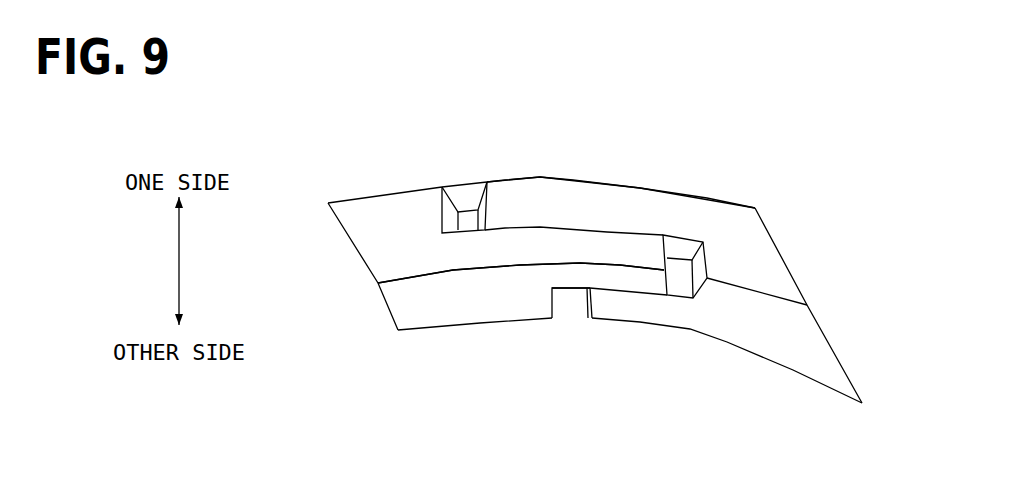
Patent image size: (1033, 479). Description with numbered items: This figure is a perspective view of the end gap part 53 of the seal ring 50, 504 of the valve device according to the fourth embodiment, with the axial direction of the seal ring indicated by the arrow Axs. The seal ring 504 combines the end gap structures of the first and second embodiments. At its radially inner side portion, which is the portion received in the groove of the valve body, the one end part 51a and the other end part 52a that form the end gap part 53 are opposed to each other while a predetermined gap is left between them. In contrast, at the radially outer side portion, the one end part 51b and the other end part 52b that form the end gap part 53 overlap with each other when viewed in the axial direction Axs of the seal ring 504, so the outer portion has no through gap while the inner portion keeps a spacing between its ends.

The seal ring 50 is at (572, 235).
The seal ring 504 is at (363, 158).
The end gap part 53 is at (510, 168).
The one end part 51b is at (547, 187).
The one end part 51a is at (642, 313).
The other end part 52a is at (537, 307).
The other end part 52b is at (582, 257).
The axial direction Axs is at (180, 260).